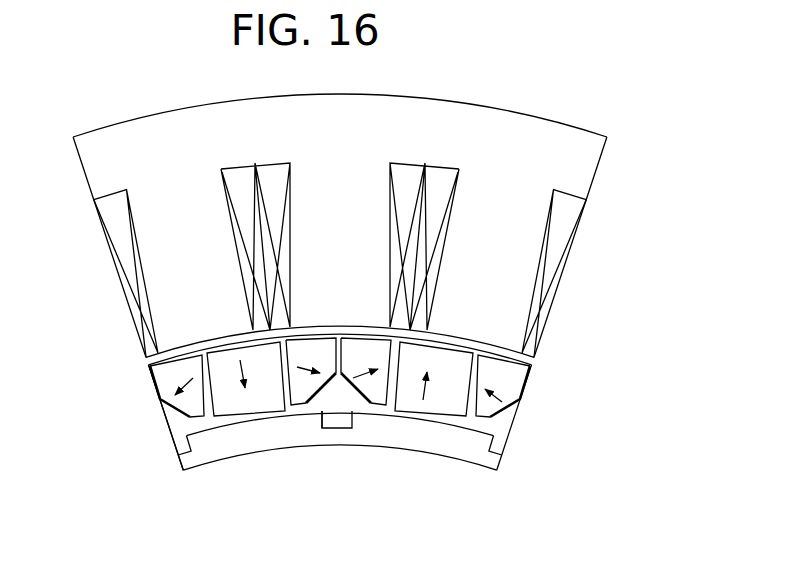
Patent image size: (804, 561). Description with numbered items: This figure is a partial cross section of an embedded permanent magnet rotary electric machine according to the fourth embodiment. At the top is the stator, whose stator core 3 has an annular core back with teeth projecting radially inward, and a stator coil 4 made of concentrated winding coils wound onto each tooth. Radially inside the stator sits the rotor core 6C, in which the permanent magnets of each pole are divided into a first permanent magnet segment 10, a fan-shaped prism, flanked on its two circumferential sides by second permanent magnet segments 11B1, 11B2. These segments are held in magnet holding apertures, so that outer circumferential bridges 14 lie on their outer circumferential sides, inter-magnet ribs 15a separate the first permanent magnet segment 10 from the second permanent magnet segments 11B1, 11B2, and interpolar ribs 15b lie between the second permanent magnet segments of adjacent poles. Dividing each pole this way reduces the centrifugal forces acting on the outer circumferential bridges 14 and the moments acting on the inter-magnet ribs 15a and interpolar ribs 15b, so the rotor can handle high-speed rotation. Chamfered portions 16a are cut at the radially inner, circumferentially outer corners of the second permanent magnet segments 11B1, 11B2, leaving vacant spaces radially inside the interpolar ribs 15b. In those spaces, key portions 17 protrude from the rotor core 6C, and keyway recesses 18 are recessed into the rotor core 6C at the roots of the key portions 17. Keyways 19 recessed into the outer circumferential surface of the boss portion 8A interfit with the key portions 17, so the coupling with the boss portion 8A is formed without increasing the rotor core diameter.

The stator core 3 is at (596, 167).
The stator coil 4 is at (579, 218).
The outer circumferential bridges 14 is at (505, 362).
The first permanent magnet segment 10 is at (253, 414).
The boss portion 8A is at (178, 470).
The rotor core 6C is at (163, 422).
The keyway recesses 18 is at (492, 435).
The key portions 17 is at (338, 432).
The keyways 19 is at (323, 428).
The chamfered portions 16a is at (158, 400).
The second permanent magnet segment 11B2 is at (204, 418).
The second permanent magnet segment 11B1 is at (305, 397).
The interpolar ribs 15b is at (367, 404).
The inter-magnet ribs 15a is at (459, 418).